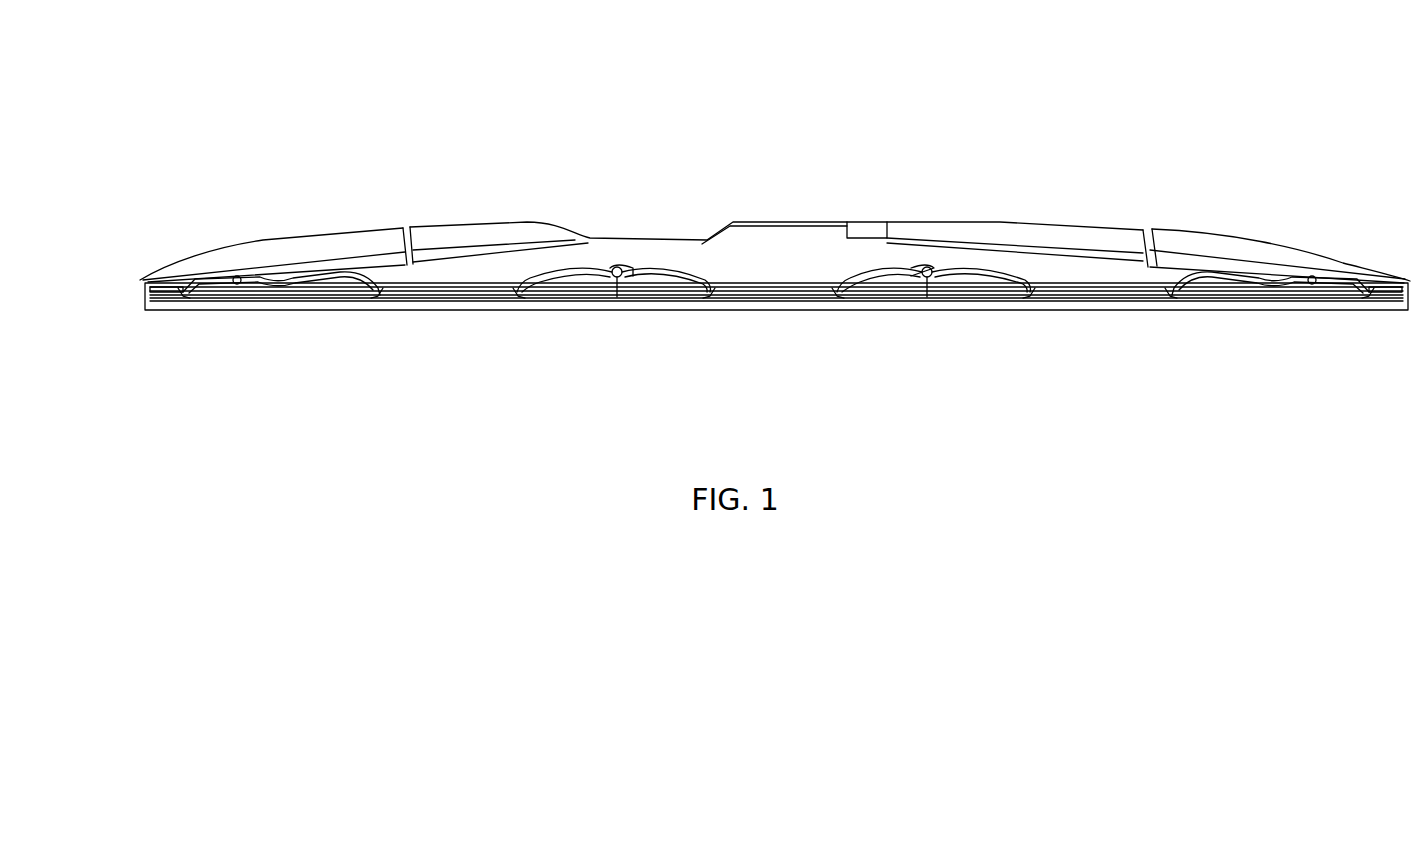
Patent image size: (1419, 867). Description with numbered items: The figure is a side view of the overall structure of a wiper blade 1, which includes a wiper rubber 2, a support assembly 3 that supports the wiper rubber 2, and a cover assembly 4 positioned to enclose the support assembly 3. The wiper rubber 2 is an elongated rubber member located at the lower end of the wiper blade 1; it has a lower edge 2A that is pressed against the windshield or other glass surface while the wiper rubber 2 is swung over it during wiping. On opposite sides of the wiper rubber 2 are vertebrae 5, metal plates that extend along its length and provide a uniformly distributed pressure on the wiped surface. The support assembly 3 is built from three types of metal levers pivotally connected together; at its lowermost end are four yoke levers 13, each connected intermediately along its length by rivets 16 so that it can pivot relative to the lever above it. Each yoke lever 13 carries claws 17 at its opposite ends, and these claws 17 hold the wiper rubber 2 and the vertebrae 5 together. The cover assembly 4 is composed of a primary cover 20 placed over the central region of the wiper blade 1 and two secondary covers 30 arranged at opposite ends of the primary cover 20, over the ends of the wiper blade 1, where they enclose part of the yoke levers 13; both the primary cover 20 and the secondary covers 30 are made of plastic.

The wiper blade 1 is at (874, 146).
The wiper rubber 2 is at (797, 306).
The lower edge 2A is at (747, 311).
The support assembly 3 is at (882, 282).
The cover assembly 4 is at (993, 198).
The vertebrae 5 is at (462, 301).
The yoke levers 13 is at (330, 280).
The rivets 16 is at (618, 280).
The claws 17 is at (183, 300).
The primary cover 20 is at (767, 220).
The secondary covers 30 is at (343, 232).